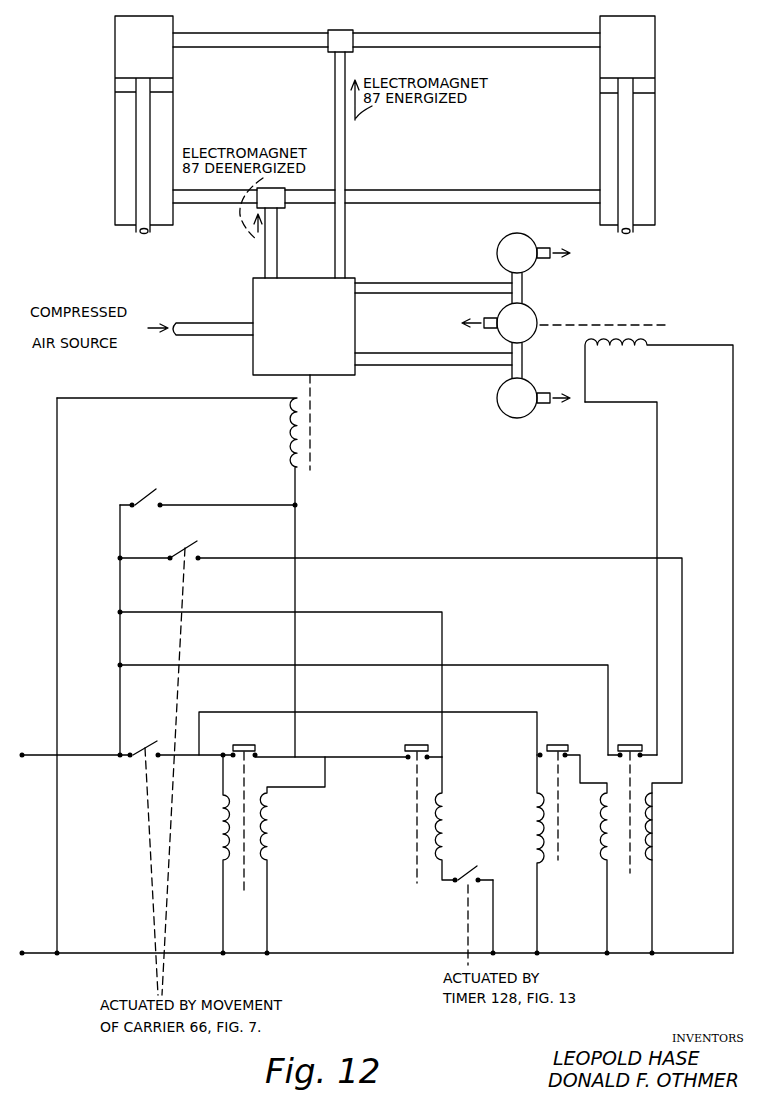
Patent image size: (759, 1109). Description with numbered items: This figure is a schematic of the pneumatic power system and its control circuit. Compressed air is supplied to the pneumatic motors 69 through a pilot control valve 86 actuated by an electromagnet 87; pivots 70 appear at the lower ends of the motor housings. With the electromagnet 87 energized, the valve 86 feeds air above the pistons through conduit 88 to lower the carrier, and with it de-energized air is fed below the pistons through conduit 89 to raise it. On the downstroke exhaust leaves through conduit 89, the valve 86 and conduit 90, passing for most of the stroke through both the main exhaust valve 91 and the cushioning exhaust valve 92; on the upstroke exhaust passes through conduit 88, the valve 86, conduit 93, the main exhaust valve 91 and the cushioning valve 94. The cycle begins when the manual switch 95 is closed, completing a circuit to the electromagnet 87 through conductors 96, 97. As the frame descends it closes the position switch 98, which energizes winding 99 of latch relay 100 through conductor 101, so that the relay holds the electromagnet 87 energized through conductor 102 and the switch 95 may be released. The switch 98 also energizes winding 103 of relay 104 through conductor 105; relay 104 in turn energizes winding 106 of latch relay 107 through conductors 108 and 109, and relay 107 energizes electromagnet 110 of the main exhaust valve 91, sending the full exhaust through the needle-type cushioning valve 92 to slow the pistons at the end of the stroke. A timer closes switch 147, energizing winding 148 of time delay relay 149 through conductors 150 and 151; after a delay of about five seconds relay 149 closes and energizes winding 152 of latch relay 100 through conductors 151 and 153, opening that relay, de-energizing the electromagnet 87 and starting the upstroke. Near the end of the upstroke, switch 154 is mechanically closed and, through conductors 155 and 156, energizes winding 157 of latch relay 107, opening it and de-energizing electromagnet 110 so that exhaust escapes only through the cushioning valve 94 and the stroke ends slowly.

The pneumatic motors 69 is at (175, 122).
The pivot 70 is at (148, 233).
The pilot control valve 86 is at (312, 313).
The electromagnet 87 is at (318, 438).
The conduit 88 is at (341, 251).
The conduit 89 is at (270, 250).
The conduit 90 is at (396, 366).
The main exhaust valve 91 is at (528, 316).
The cushioning exhaust valve 92 is at (528, 391).
The conduit 93 is at (383, 285).
The cushioning valve 94 is at (528, 246).
The manual switch 95 is at (140, 498).
The conductor 96 is at (120, 528).
The conductor 97 is at (58, 573).
The position switch 98 is at (138, 750).
The winding 99 is at (223, 848).
The latch relay 100 is at (271, 845).
The conductor 101 is at (223, 882).
The conductor 102 is at (297, 541).
The winding 103 is at (559, 854).
The relay 104 is at (584, 745).
The conductor 105 is at (538, 712).
The winding 106 is at (607, 857).
The latch relay 107 is at (662, 838).
The conductor 108 is at (540, 666).
The conductor 109 is at (733, 903).
The electromagnet 110 is at (630, 350).
The switch 147 is at (468, 875).
The winding 148 is at (440, 868).
The time delay relay 149 is at (421, 774).
The conductor 150 is at (493, 917).
The conductor 151 is at (345, 612).
The winding 152 is at (266, 846).
The conductor 153 is at (268, 900).
The switch 154 is at (172, 556).
The conductor 155 is at (423, 557).
The conductor 156 is at (653, 890).
The winding 157 is at (653, 851).